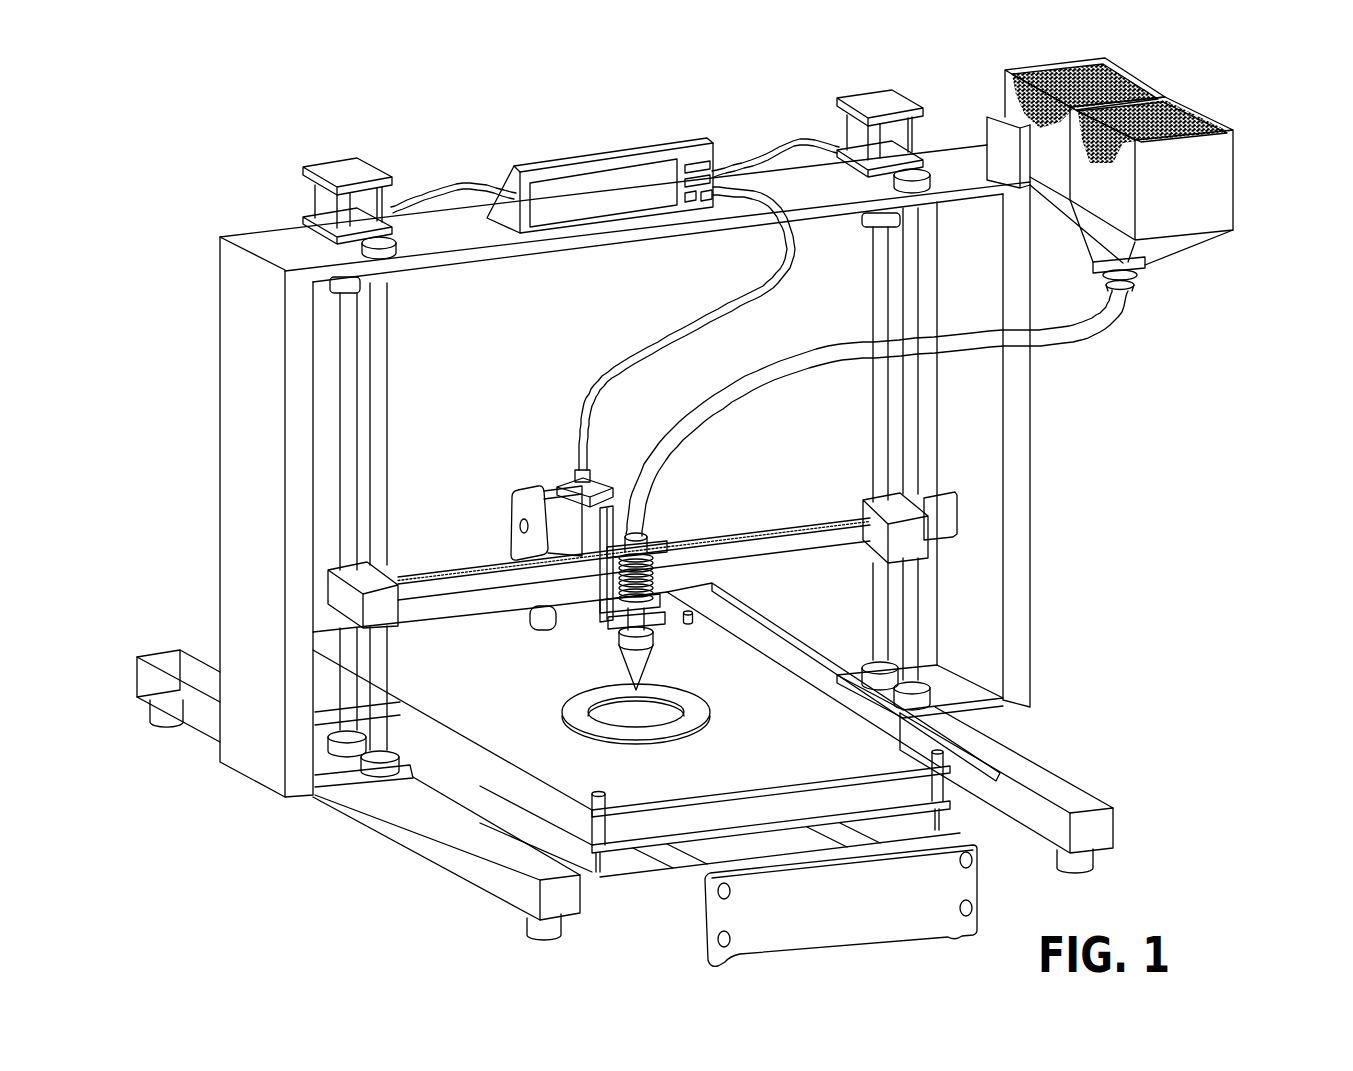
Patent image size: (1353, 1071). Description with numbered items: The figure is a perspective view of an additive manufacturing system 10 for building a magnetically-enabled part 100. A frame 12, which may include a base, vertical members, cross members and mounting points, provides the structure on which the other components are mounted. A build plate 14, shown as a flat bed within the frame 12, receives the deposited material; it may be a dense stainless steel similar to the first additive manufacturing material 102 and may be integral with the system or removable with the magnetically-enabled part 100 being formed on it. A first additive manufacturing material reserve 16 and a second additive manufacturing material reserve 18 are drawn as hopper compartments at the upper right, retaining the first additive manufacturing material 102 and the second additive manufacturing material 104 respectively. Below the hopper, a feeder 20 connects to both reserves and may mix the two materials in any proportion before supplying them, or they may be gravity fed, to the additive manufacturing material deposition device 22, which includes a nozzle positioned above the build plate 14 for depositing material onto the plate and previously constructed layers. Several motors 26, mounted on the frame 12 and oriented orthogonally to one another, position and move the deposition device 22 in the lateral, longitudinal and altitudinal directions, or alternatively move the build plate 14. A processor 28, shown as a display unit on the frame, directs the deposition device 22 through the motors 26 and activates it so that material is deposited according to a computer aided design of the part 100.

The additive manufacturing system 10 is at (364, 95).
The frame 12 is at (160, 486).
The build plate 14 is at (477, 665).
The first additive manufacturing material reserve 16 is at (988, 85).
The second additive manufacturing material reserve 18 is at (1255, 149).
The feeder 20 is at (1088, 237).
The additive manufacturing material deposition device 22 is at (600, 652).
The motors 26 is at (338, 167).
The processor 28 is at (567, 170).
The magnetically-enabled part 100 is at (705, 685).
The first additive manufacturing material 102 is at (1134, 71).
The second additive manufacturing material 104 is at (1201, 113).